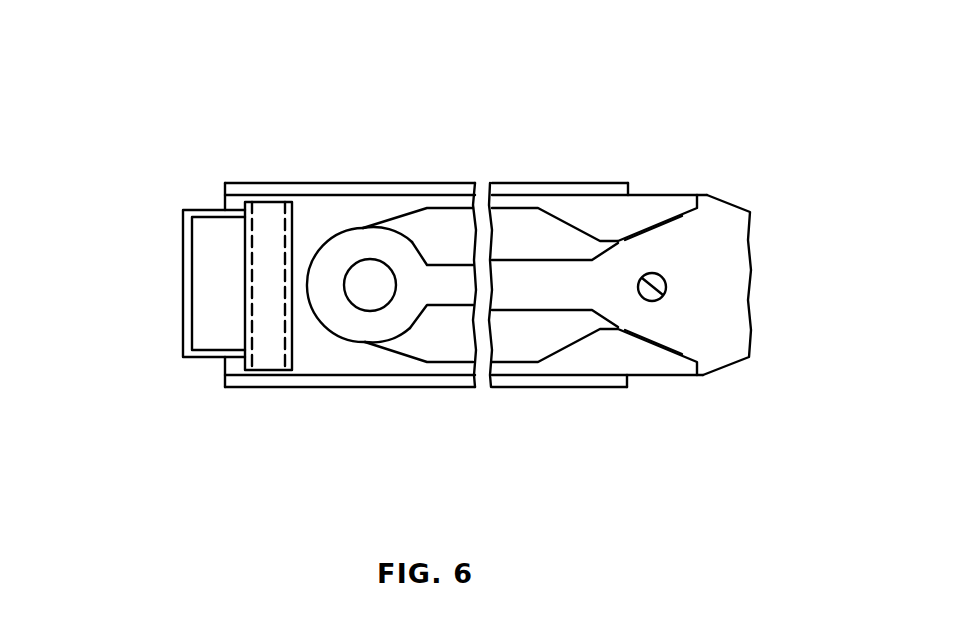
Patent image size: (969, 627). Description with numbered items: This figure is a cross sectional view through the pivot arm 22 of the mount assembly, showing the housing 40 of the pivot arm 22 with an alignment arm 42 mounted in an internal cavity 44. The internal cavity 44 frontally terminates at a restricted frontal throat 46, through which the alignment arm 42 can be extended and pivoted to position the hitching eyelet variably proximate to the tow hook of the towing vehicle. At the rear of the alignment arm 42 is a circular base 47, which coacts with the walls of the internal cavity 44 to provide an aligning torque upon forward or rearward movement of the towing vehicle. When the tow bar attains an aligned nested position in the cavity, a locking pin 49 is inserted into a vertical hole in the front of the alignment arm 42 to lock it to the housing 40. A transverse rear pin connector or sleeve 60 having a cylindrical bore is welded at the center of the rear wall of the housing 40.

The pivot arm 22 is at (355, 383).
The housing 40 is at (392, 205).
The alignment arm 42 is at (522, 292).
The internal cavity 44 is at (518, 227).
The restricted frontal throat 46 is at (610, 228).
The circular base 47 is at (360, 250).
The locking pin 49 is at (665, 290).
The rear pin sleeve 60 is at (248, 318).